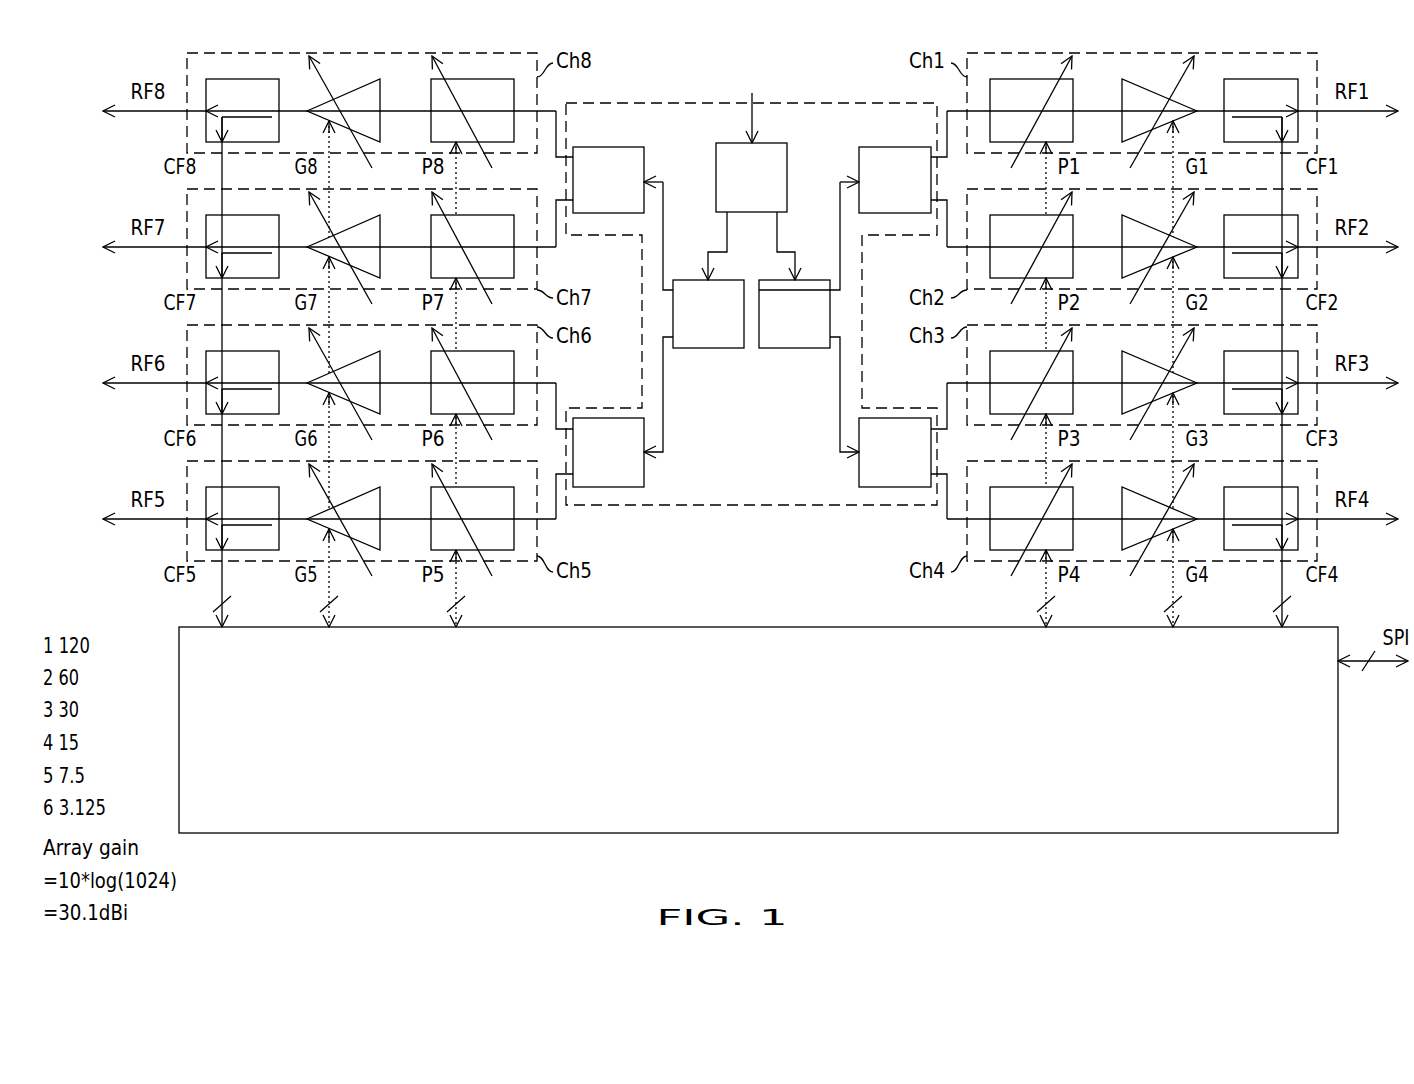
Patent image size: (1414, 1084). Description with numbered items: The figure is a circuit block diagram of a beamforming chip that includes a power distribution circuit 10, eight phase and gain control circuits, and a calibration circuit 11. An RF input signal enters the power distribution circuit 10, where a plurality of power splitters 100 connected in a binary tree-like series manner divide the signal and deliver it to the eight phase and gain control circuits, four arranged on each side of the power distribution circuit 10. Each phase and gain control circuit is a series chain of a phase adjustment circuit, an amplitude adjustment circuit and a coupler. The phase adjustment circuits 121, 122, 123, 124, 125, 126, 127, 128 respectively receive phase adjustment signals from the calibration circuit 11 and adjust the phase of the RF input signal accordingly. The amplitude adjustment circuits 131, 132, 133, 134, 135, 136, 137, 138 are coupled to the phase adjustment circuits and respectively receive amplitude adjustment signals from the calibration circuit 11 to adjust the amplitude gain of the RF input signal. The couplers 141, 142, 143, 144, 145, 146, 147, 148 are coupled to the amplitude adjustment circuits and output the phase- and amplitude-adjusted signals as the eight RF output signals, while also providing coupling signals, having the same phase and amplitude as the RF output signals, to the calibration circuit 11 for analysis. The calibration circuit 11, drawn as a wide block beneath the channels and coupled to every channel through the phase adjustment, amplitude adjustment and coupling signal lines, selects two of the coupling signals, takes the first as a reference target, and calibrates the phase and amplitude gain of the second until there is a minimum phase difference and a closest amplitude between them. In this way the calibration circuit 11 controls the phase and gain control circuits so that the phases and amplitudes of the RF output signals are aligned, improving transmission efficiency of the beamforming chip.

The power distribution circuit 10 is at (751, 278).
The power splitter 100 is at (752, 315).
The calibration circuit 11 is at (179, 730).
The phase adjustment circuit 121 is at (1031, 111).
The phase adjustment circuit 122 is at (1031, 247).
The phase adjustment circuit 123 is at (1031, 383).
The phase adjustment circuit 124 is at (1031, 519).
The phase adjustment circuit 125 is at (472, 519).
The phase adjustment circuit 126 is at (472, 383).
The phase adjustment circuit 127 is at (472, 247).
The phase adjustment circuit 128 is at (472, 111).
The amplitude adjustment circuit 131 is at (1157, 111).
The amplitude adjustment circuit 132 is at (1157, 247).
The amplitude adjustment circuit 133 is at (1157, 383).
The amplitude adjustment circuit 134 is at (1157, 519).
The amplitude adjustment circuit 135 is at (346, 519).
The amplitude adjustment circuit 136 is at (346, 383).
The amplitude adjustment circuit 137 is at (346, 247).
The amplitude adjustment circuit 138 is at (346, 111).
The coupler 141 is at (1261, 98).
The coupler 142 is at (1261, 234).
The coupler 143 is at (1261, 370).
The coupler 144 is at (1261, 506).
The coupler 145 is at (242, 506).
The coupler 146 is at (242, 370).
The coupler 147 is at (242, 234).
The coupler 148 is at (242, 98).